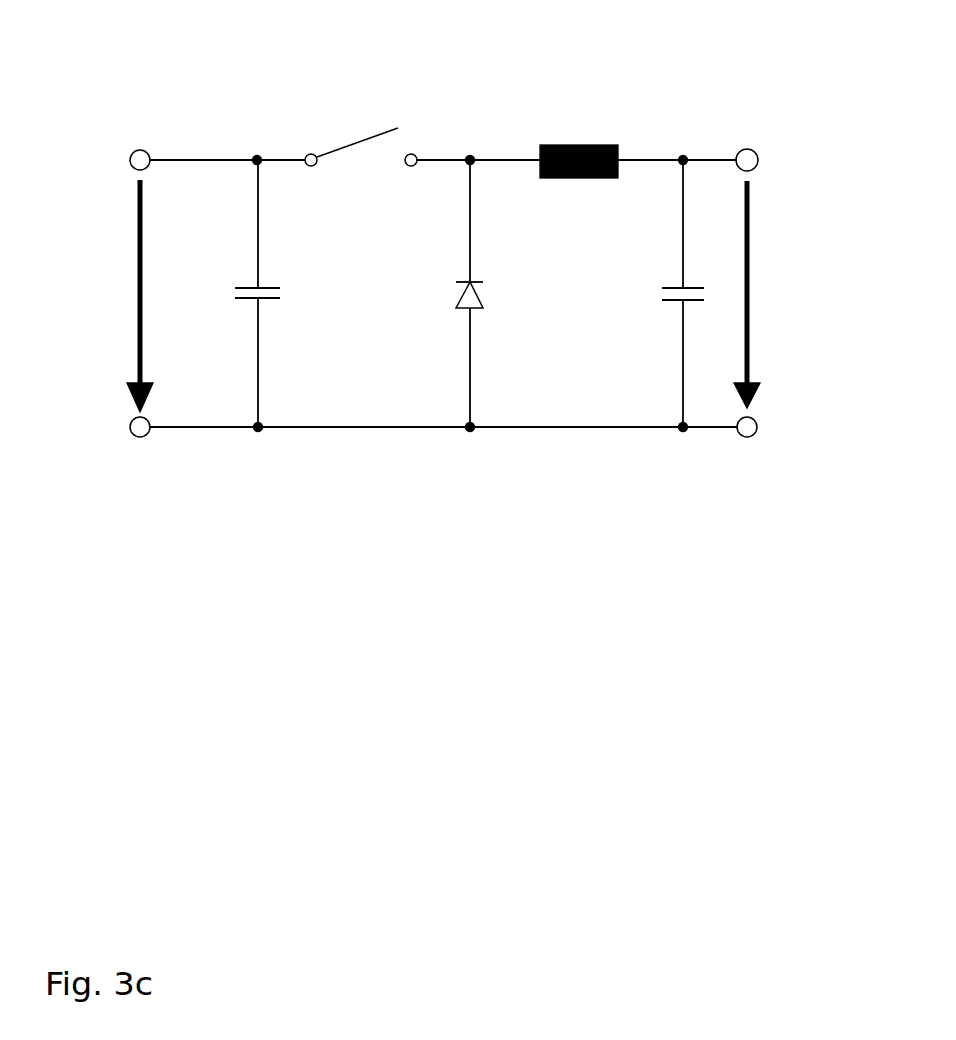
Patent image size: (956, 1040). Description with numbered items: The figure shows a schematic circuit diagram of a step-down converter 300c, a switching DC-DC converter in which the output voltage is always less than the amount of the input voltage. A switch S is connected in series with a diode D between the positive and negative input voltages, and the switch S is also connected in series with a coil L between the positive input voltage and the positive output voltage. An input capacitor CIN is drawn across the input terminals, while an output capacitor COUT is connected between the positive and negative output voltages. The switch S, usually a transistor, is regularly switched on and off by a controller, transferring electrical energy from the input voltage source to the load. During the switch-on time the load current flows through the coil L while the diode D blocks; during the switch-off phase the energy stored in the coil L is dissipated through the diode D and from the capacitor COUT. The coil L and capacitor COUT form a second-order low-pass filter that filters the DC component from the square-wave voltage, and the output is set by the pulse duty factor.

The step-down converter 300c is at (296, 112).
The switch S is at (361, 162).
The input capacitor CIN is at (231, 293).
The diode D is at (458, 293).
The coil L is at (579, 143).
The output capacitor COUT is at (656, 293).